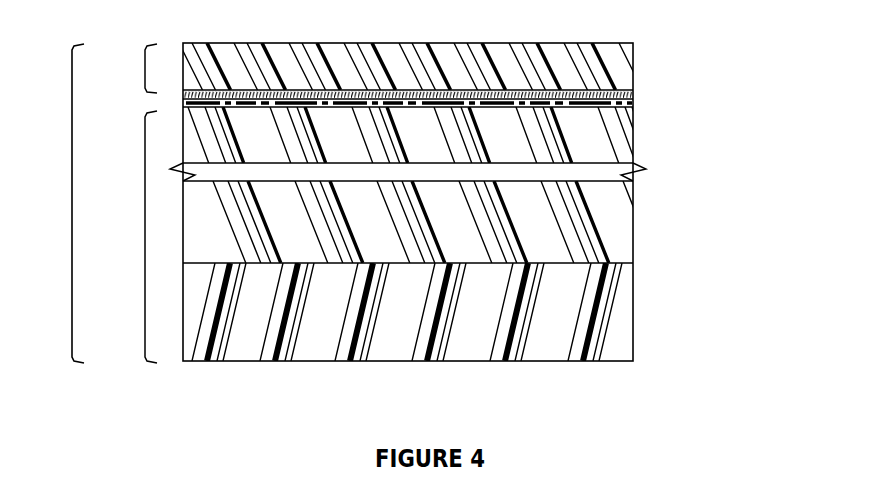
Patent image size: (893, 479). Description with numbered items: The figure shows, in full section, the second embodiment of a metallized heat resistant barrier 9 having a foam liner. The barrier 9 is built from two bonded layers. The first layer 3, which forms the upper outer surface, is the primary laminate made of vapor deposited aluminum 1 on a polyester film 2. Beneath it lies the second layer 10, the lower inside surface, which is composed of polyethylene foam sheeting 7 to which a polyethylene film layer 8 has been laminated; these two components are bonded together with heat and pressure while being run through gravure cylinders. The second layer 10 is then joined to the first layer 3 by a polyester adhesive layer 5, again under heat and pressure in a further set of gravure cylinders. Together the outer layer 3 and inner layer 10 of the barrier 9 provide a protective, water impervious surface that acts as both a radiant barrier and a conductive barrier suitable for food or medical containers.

The vapor deposited aluminum 1 is at (633, 92).
The polyester film 2 is at (633, 62).
The first layer 3 is at (134, 68).
The polyester adhesive layer 5 is at (633, 102).
The polyethylene foam sheeting 7 is at (633, 205).
The polyethylene film layer 8 is at (633, 325).
The metallized heat resistant barrier 9 is at (55, 203).
The second layer 10 is at (127, 237).